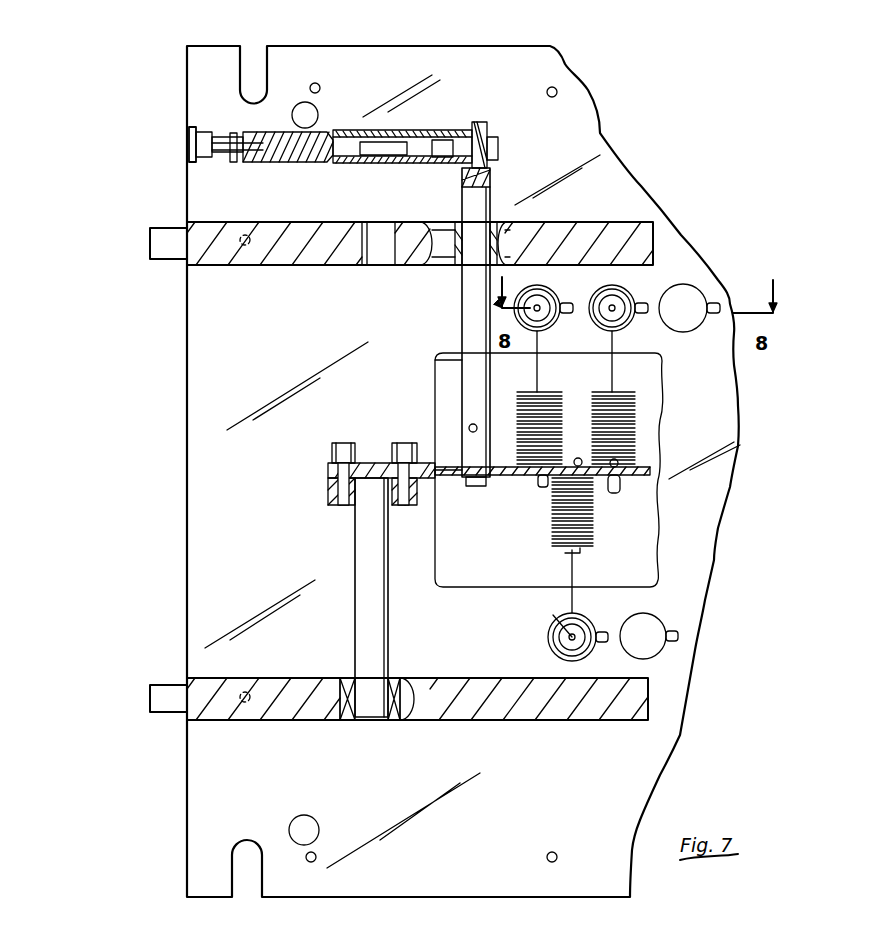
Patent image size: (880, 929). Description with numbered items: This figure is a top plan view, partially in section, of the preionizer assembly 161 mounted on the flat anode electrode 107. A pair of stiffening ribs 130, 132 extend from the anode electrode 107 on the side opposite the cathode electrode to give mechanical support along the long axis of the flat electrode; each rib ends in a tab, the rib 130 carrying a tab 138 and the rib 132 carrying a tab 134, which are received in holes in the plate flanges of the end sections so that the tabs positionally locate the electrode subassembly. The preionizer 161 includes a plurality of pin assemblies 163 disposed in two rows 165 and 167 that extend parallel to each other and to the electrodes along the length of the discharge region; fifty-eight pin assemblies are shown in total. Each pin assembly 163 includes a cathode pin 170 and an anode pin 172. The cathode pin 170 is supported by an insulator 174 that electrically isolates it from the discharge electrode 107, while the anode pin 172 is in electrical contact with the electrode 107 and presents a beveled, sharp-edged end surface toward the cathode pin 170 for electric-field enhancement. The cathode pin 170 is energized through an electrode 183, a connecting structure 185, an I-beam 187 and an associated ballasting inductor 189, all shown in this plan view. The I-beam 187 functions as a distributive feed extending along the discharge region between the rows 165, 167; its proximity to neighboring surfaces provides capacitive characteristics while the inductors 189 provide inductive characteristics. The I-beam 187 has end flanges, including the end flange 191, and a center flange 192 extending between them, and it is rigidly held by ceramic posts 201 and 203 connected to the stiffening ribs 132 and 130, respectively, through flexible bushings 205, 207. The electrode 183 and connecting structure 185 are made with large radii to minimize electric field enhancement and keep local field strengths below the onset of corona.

The anode electrode 107 is at (205, 462).
The preionizer assembly 161 is at (236, 395).
The stiffening rib 130 is at (217, 257).
The stiffening rib 132 is at (215, 712).
The tab 138 is at (150, 228).
The tab 134 is at (158, 685).
The electrode 183 is at (188, 144).
The connecting structure 185 is at (438, 115).
The row of pin assemblies 165 is at (455, 320).
The ceramic post 203 is at (482, 200).
The flexible bushing 207 is at (453, 232).
The ceramic post 201 is at (368, 555).
The flexible bushing 205 is at (395, 712).
The I-beam 187 is at (430, 413).
The end flange 191 is at (445, 362).
The center flange 192 is at (512, 476).
The ballasting inductor 189 is at (545, 408).
The pin assembly 163 is at (580, 288).
The row of pin assemblies 167 is at (535, 634).
The cathode pin 170 is at (560, 630).
The anode pin 172 is at (598, 645).
The insulator 174 is at (552, 620).